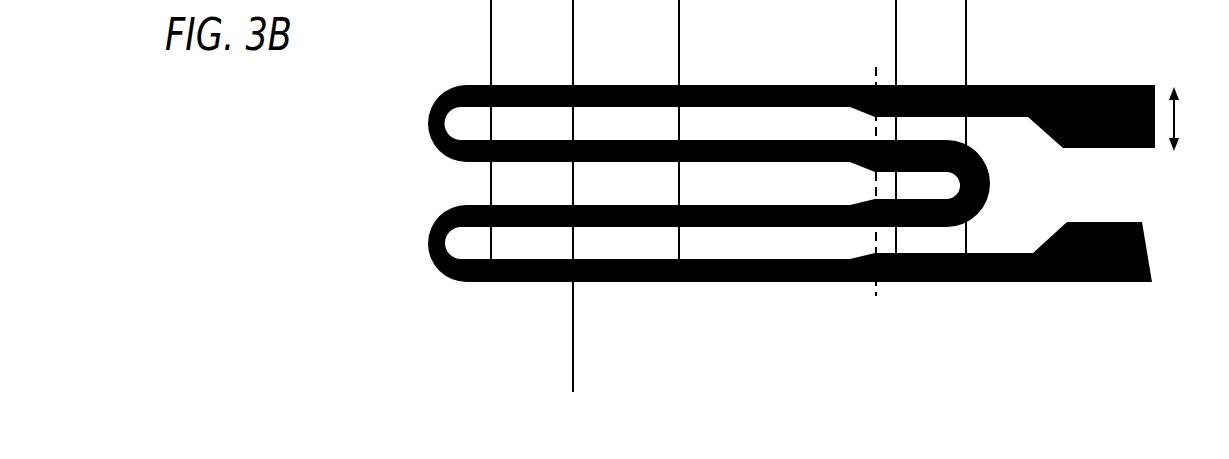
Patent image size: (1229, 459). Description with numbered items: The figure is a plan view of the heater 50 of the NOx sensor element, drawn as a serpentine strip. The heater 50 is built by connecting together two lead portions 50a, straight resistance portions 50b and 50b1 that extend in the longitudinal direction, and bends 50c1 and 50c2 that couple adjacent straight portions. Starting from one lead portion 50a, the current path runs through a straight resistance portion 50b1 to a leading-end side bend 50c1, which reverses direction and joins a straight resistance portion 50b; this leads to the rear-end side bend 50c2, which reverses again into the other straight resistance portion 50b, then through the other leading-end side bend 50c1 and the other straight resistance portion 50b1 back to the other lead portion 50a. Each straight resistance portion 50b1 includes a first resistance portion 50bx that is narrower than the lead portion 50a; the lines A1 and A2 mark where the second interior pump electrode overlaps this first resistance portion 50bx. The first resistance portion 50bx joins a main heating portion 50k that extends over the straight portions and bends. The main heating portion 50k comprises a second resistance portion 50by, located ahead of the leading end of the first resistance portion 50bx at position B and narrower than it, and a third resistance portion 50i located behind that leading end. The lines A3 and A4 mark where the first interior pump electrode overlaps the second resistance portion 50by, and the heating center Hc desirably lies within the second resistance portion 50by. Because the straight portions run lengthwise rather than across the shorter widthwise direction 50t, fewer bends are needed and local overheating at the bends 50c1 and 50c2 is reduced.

The heater 50 is at (405, 166).
The lead portion 50a is at (1113, 84).
The straight resistance portion 50b is at (640, 207).
The straight resistance portion 50b1 is at (606, 84).
The first resistance portion 50bx is at (996, 84).
The second resistance portion 50by is at (757, 84).
The leading-end side bend 50c1 is at (430, 97).
The rear-end side bend 50c2 is at (991, 183).
The third resistance portion 50i is at (934, 240).
The main heating portion 50k is at (902, 367).
The widthwise direction of the NOx sensor element 50t is at (1196, 119).
The straight line A1 is at (876, 155).
The straight line A2 is at (984, 141).
The straight line A3 is at (471, 141).
The straight line A4 is at (698, 141).
The position B is at (883, 163).
The heating center Hc is at (579, 212).